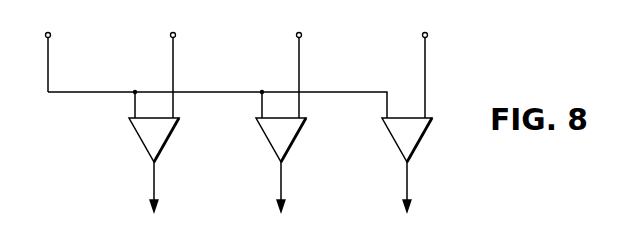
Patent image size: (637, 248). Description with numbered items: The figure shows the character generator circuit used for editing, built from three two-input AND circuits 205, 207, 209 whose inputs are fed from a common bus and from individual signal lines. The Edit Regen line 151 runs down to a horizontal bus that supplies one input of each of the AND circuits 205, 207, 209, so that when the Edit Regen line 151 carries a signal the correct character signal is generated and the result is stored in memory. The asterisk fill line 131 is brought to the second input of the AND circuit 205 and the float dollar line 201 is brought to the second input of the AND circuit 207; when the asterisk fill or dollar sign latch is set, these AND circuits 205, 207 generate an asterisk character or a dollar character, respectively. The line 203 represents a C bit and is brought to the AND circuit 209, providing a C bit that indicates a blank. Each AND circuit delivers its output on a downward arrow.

The Edit Regen line 151 is at (46, 50).
The asterisk fill line 131 is at (171, 50).
The float dollar line 201 is at (297, 50).
The C bit line 203 is at (423, 50).
The AND circuit 205 is at (168, 139).
The AND circuit 207 is at (295, 139).
The AND circuit 209 is at (421, 139).